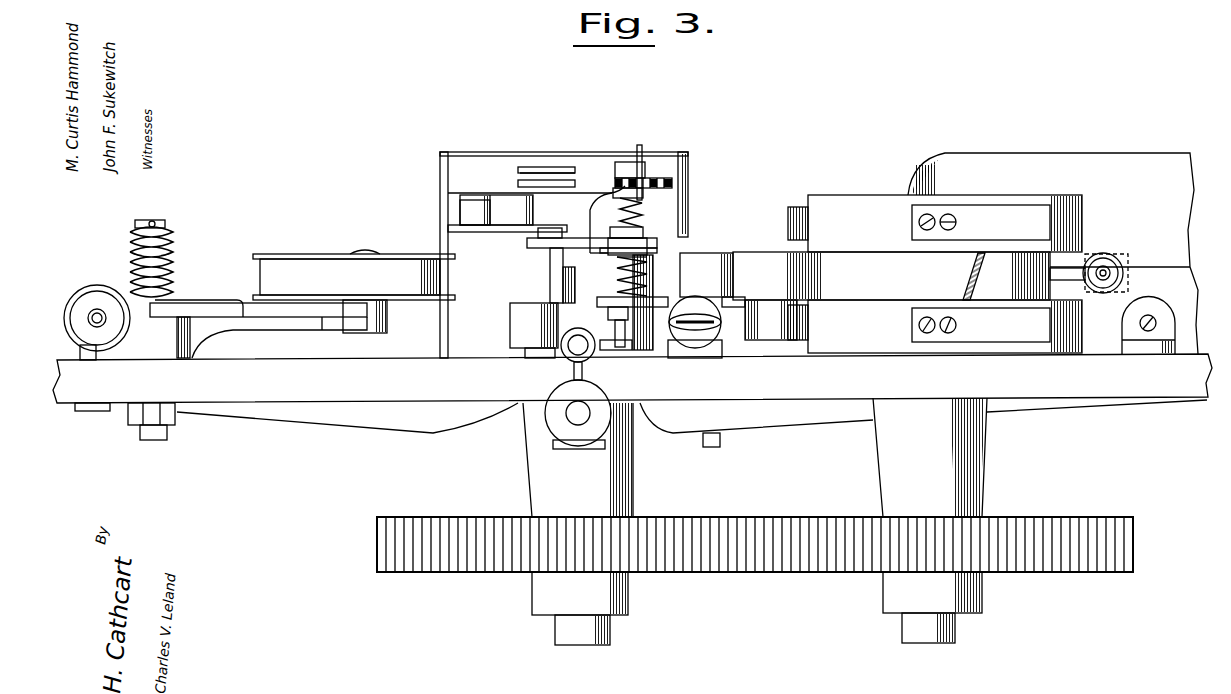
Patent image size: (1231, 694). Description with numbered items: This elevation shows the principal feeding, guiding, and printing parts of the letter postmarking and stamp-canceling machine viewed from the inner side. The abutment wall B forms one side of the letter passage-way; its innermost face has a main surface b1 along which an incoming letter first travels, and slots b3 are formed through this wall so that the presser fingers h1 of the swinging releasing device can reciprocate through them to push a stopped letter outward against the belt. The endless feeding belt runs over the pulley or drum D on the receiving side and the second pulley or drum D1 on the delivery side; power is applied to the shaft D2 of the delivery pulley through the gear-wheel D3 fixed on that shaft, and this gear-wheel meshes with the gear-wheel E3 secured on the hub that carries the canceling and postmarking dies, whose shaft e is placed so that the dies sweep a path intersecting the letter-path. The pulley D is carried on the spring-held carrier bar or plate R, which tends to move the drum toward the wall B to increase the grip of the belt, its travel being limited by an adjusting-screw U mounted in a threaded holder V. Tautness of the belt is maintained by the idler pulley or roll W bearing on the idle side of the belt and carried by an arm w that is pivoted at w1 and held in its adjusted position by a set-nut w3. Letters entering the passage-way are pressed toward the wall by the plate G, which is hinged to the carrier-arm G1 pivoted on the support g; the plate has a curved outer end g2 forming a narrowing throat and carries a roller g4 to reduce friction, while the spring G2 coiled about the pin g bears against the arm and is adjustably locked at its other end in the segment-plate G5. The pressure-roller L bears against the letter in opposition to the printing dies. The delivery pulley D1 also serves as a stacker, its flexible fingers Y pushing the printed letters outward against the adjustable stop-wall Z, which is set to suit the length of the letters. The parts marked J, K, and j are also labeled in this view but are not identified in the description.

The wall B is at (508, 152).
The main surface b1 is at (487, 272).
The slots b3 is at (518, 170).
The presser fingers h1 is at (540, 167).
The curved outer end g2 is at (462, 196).
The roller g4 is at (460, 210).
The plate G is at (518, 195).
The carrier-arm G1 is at (590, 200).
The support g is at (638, 147).
The segment-plate G5 is at (655, 176).
The spring G2 is at (643, 192).
The spring j is at (667, 257).
The bar K is at (663, 298).
The block J is at (683, 301).
The pressure-roller L is at (540, 320).
The pivot w1 is at (620, 350).
The set-nut w3 is at (693, 342).
The arm w is at (752, 320).
The idler pulley W is at (891, 276).
The second pulley D1 is at (945, 274).
The flexible fingers Y is at (778, 342).
The adjustable stop-wall Z is at (1089, 292).
The adjusting-screw U is at (95, 310).
The threaded holder V is at (80, 352).
The carrier bar R is at (213, 303).
The pulley D is at (316, 250).
The shaft e is at (572, 638).
The shaft D2 is at (903, 640).
The gear-wheel E3 is at (377, 553).
The gear-wheel D3 is at (1134, 572).